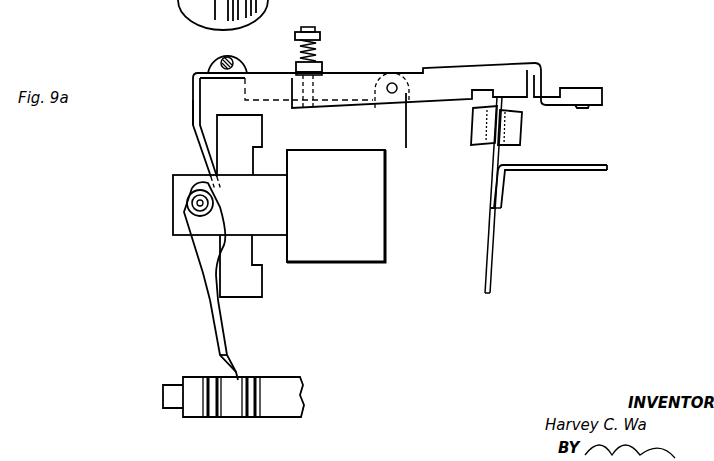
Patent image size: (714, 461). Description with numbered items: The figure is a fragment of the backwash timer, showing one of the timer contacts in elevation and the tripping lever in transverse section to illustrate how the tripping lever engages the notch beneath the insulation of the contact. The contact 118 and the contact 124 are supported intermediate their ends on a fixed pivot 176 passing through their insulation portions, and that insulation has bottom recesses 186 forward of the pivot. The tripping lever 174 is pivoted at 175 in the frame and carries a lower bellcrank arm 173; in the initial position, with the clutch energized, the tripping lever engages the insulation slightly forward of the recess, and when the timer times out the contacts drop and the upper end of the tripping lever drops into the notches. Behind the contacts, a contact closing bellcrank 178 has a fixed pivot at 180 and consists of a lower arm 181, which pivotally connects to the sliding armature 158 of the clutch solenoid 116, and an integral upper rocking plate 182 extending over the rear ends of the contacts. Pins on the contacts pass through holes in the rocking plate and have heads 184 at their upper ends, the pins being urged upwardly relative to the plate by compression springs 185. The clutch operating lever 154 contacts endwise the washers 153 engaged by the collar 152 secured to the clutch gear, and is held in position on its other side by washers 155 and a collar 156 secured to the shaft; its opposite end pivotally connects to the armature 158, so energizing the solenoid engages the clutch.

The clutch solenoid 116 is at (357, 255).
The contact 118 is at (538, 66).
The contact 124 is at (460, 77).
The collar 152 is at (284, 377).
The washers 153 is at (250, 380).
The clutch operating lever 154 is at (203, 256).
The washers 155 is at (215, 410).
The collar 156 is at (198, 383).
The sliding armature 158 is at (172, 189).
The lower bellcrank arm 173 is at (497, 160).
The tripping lever 174 is at (601, 165).
The pivot 175 is at (491, 205).
The fixed pivot 176 is at (394, 82).
The contact closing bellcrank 178 is at (254, 70).
The fixed pivot 180 is at (214, 56).
The lower arm 181 is at (191, 112).
The rocking plate 182 is at (311, 27).
The heads 184 is at (321, 36).
The compression springs 185 is at (323, 67).
The bottom recesses 186 is at (484, 92).